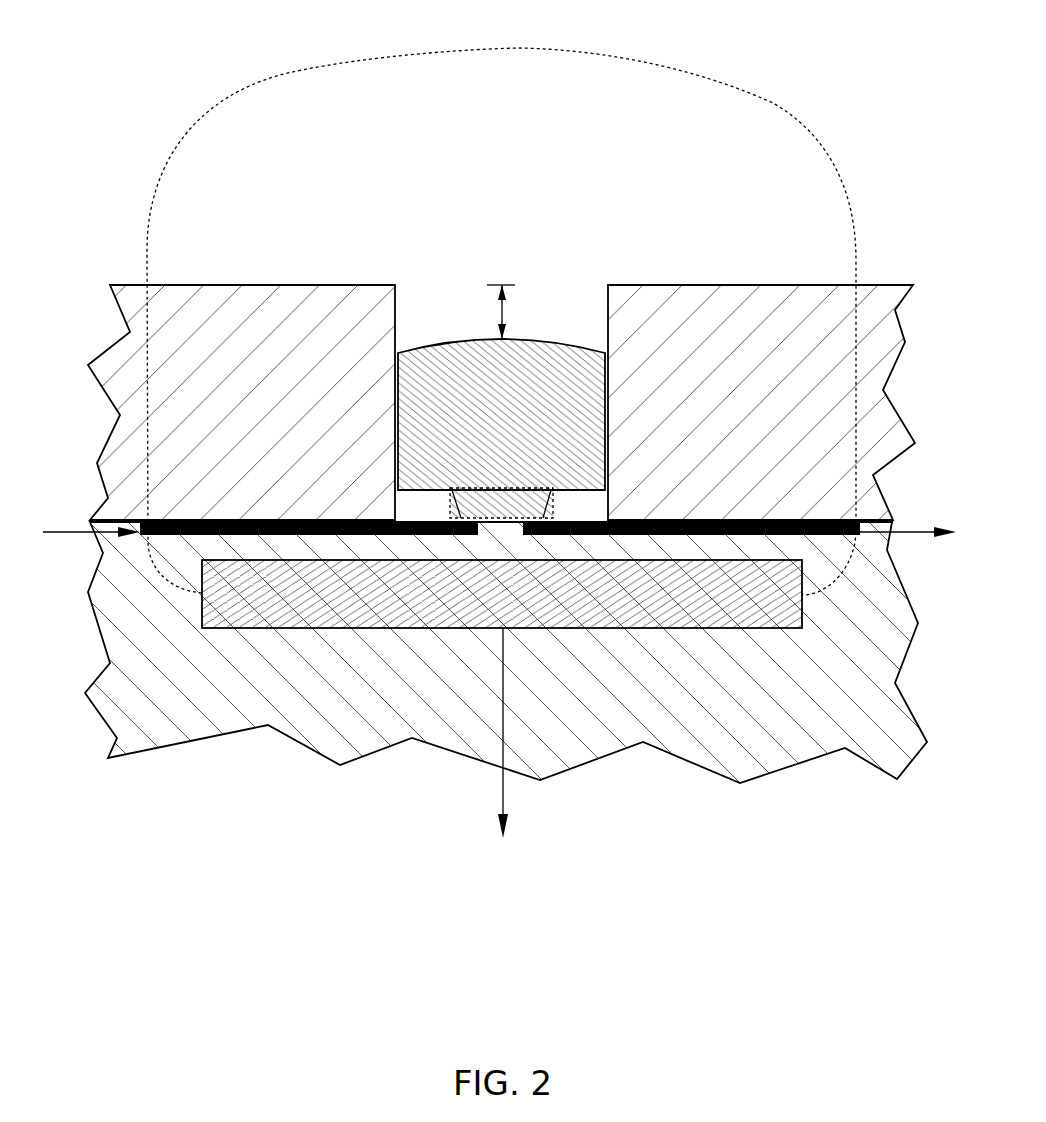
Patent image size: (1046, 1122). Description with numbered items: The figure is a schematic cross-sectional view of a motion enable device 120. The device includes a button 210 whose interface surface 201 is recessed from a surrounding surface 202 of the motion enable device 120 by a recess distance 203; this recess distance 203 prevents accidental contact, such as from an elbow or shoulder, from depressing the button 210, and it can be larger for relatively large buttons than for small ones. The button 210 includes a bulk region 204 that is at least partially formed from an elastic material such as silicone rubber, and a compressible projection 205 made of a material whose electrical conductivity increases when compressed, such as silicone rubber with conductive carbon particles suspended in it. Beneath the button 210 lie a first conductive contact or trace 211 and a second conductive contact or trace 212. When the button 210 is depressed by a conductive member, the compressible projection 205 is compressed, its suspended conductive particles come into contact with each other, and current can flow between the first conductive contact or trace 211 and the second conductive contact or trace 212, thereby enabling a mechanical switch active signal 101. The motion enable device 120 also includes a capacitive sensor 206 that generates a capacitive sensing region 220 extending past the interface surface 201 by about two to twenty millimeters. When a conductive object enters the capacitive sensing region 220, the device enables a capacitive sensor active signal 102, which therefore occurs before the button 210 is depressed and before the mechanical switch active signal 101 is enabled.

The motion enable device 120 is at (222, 68).
The capacitive sensing region 220 is at (518, 50).
The interface surface 201 is at (447, 338).
The surrounding surface 202 is at (732, 285).
The recess distance 203 is at (495, 308).
The bulk region 204 is at (522, 421).
The compressible projection 205 is at (451, 490).
The capacitive sensor 206 is at (522, 606).
The button 210 is at (556, 284).
The first conductive contact or trace 211 is at (90, 522).
The second conductive contact or trace 212 is at (862, 522).
The mechanical switch active signal 101 is at (80, 537).
The capacitive sensor active signal 102 is at (503, 797).